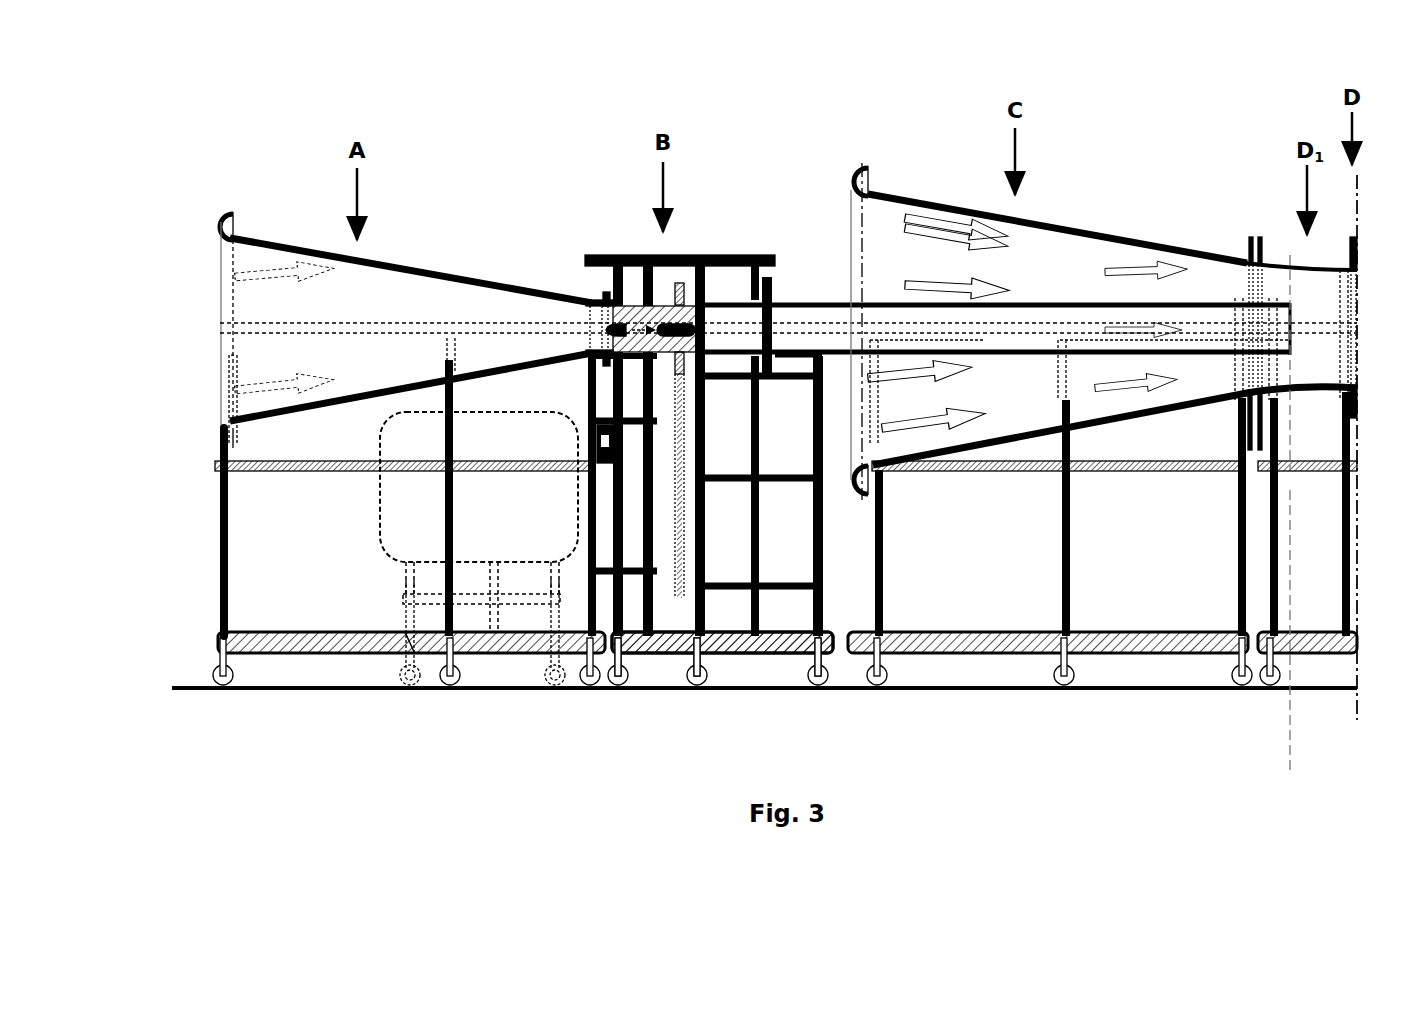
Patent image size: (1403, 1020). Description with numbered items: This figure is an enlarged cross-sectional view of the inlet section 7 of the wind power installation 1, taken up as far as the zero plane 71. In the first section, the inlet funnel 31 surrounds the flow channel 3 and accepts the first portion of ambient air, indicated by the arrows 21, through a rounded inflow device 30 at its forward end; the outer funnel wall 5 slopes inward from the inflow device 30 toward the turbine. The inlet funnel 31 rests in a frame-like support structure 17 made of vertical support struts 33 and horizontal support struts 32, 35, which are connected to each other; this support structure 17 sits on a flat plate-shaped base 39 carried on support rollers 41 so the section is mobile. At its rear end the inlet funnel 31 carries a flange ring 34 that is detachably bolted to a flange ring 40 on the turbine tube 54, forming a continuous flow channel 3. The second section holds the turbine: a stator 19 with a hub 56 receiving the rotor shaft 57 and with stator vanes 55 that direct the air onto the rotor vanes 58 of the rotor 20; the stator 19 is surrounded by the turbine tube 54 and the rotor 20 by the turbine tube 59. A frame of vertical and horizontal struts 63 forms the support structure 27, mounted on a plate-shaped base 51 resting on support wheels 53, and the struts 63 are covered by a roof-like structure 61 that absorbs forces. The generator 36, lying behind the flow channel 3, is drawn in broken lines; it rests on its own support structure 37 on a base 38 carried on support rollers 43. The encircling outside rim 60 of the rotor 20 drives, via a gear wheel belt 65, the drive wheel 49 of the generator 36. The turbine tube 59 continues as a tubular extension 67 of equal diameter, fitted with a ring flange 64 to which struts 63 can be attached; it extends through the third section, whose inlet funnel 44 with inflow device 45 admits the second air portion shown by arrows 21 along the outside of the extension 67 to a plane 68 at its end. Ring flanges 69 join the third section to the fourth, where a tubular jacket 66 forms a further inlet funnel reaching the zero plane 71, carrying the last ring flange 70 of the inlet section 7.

The wind power installation 1 is at (547, 112).
The flow channel 3 is at (232, 282).
The outer wall 5 is at (385, 263).
The inlet section 7 is at (893, 775).
The support structure 17 is at (205, 618).
The stator 19 is at (628, 258).
The rotor 20 is at (665, 300).
The arrows 21 is at (242, 263).
The support structure 27 is at (732, 615).
The inflow device 30 is at (230, 212).
The inlet funnel 31 is at (293, 248).
The horizontal support struts 32 is at (295, 323).
The vertical support struts 33 is at (225, 353).
The flange ring 34 is at (600, 302).
The horizontal reinforcing struts 35 is at (293, 475).
The generator 36 is at (418, 540).
The support structure 37 is at (555, 596).
The base 38 is at (395, 632).
The base 39 is at (287, 637).
The flange ring 40 is at (600, 298).
The support rollers 41 is at (228, 686).
The support rollers 43 is at (410, 690).
The inlet funnel 44 is at (1052, 228).
The inflow device 45 is at (862, 160).
The drive wheel 49 is at (679, 600).
The base 51 is at (651, 656).
The support wheels 53 is at (620, 686).
The turbine tube 54 is at (610, 306).
The stator vanes 55 is at (640, 316).
The hub 56 is at (635, 372).
The rotor shaft 57 is at (712, 360).
The rotor vanes 58 is at (702, 330).
The turbine tube 59 is at (766, 330).
The outside rim 60 is at (681, 285).
The roof-like structure 61 is at (606, 292).
The struts 63 is at (652, 300).
The ring flange 64 is at (805, 352).
The gear wheel belt 65 is at (710, 400).
The tubular jacket 66 is at (1300, 263).
The tubular extension 67 is at (1033, 303).
The plane 68 is at (1290, 283).
The ring flanges 69 is at (1260, 236).
The ring flange 70 is at (1352, 295).
The zero plane 71 is at (1360, 218).